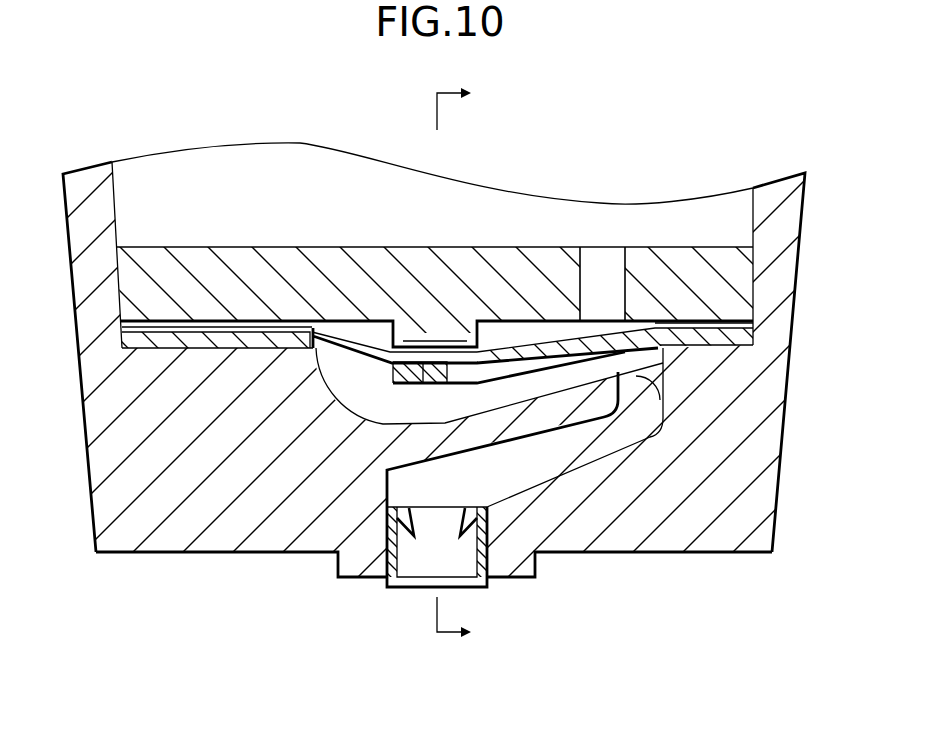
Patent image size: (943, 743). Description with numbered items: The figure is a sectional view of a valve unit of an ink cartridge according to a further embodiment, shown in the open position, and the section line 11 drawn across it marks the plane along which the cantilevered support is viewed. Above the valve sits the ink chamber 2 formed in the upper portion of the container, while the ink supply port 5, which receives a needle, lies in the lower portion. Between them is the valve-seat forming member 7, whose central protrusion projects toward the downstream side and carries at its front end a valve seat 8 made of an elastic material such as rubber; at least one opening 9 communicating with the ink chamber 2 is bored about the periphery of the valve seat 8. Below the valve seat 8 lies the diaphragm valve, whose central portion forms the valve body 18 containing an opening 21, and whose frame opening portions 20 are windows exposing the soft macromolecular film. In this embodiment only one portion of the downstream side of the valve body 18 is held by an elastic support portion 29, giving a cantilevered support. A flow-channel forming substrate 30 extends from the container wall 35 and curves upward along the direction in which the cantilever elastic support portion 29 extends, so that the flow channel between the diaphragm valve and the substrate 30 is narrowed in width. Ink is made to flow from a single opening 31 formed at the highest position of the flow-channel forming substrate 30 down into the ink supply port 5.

The ink chamber 2 is at (703, 210).
The ink supply port 5 is at (410, 568).
The valve-seat forming member 7 is at (137, 290).
The valve seat 8 is at (457, 340).
The opening 9 is at (606, 252).
The section line XI-XI 11 is at (474, 363).
The valve body 18 is at (392, 364).
The frame opening portion 20 is at (350, 340).
The opening 21 is at (433, 384).
The elastic support portion 29 is at (570, 355).
The flow-channel forming substrate 30 is at (492, 427).
The opening 31 is at (638, 378).
The container wall 35 is at (137, 512).